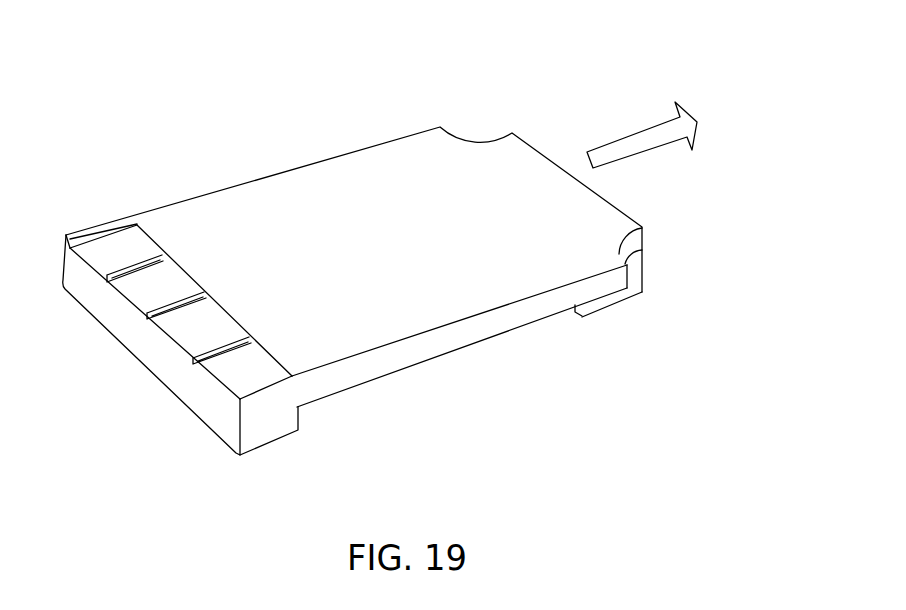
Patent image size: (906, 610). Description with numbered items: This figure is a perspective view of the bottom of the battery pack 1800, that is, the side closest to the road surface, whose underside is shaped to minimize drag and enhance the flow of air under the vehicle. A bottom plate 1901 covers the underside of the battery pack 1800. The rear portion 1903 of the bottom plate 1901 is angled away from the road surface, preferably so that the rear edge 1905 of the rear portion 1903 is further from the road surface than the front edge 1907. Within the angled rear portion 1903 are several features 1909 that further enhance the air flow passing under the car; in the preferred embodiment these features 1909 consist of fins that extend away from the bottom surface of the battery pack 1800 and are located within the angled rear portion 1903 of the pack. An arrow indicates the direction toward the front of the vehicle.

The battery pack 1800 is at (551, 77).
The bottom plate 1901 is at (437, 204).
The rear portion 1903 is at (122, 258).
The rear edge 1905 is at (223, 388).
The front edge 1907 is at (278, 359).
The features 1909 is at (122, 270).